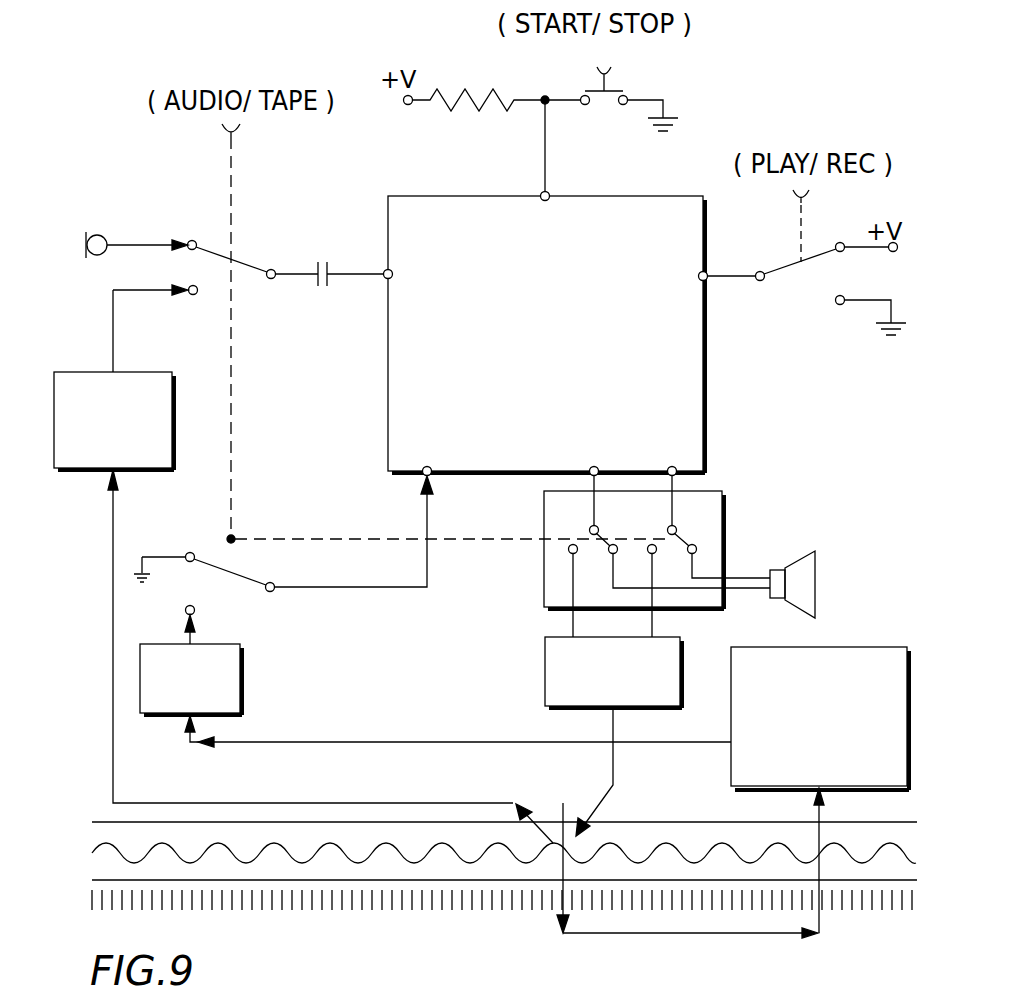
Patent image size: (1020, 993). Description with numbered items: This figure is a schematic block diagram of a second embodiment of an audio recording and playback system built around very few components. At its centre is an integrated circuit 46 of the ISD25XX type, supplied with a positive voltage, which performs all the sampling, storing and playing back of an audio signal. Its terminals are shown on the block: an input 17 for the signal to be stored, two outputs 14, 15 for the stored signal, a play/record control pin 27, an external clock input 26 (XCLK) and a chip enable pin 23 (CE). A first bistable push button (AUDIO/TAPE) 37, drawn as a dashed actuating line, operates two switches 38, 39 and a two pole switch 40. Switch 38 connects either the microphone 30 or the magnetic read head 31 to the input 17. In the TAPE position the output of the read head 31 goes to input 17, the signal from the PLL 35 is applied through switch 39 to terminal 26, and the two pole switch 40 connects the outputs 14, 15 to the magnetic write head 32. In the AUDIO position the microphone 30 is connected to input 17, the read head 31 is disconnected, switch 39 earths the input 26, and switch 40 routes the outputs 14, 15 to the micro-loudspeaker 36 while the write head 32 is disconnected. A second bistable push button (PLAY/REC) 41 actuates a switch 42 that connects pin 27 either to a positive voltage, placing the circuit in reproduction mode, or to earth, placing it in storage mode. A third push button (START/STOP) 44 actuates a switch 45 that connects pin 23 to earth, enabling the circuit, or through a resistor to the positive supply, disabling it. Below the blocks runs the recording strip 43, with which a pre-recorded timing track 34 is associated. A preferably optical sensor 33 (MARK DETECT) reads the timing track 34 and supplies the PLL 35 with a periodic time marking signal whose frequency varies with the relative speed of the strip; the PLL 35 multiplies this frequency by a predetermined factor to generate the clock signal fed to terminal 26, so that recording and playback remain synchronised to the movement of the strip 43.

The output pin 14 is at (590, 467).
The output pin 15 is at (668, 467).
The input pin 17 is at (393, 276).
The chip enable pin (CE) 23 is at (550, 199).
The external clock input pin (XCLK) 26 is at (430, 467).
The play/record control pin 27 is at (698, 270).
The microphone 30 is at (110, 240).
The magnetic read head 31 is at (82, 370).
The magnetic write head 32 is at (545, 670).
The sensor 33 is at (858, 648).
The timing track 34 is at (863, 910).
The phase locked frequency multiplier circuit (PLL) 35 is at (243, 686).
The micro-loudspeaker 36 is at (815, 598).
The first bistable push button (AUDIO/TAPE) 37 is at (222, 134).
The switch 38 is at (242, 258).
The switch 39 is at (240, 576).
The two pole switch 40 is at (725, 511).
The second bistable push button (PLAY/REC) 41 is at (808, 195).
The switch 42 is at (782, 275).
The recording strip 43 is at (680, 788).
The third push button (START/STOP) 44 is at (597, 76).
The switch 45 is at (615, 86).
The integrated circuit 46 is at (707, 381).